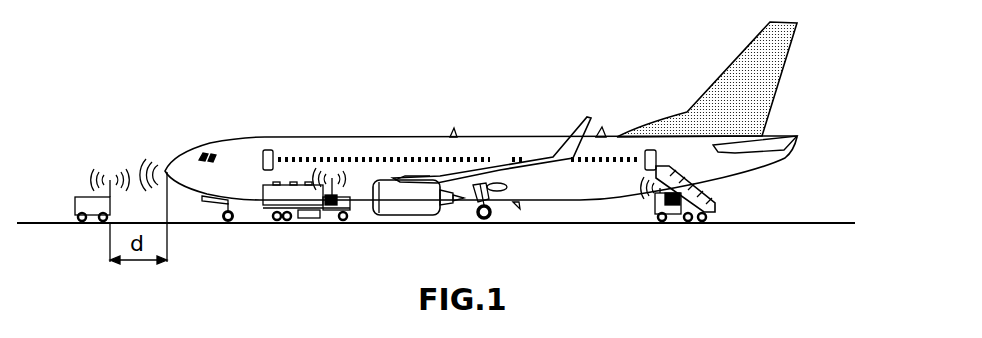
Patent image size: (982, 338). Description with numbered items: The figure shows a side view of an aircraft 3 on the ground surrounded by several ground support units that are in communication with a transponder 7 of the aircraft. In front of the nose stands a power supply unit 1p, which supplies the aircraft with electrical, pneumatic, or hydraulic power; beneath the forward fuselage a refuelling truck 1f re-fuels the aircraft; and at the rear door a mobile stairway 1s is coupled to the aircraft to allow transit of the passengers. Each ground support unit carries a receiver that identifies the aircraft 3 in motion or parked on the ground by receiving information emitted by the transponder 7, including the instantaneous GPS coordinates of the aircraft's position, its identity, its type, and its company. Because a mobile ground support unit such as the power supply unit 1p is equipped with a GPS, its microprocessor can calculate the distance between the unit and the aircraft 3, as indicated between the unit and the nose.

The aircraft 3 is at (310, 138).
The transponder 7 is at (166, 165).
The power supply unit 1p is at (93, 200).
The refuelling truck 1f is at (327, 235).
The mobile stairway 1s is at (653, 234).